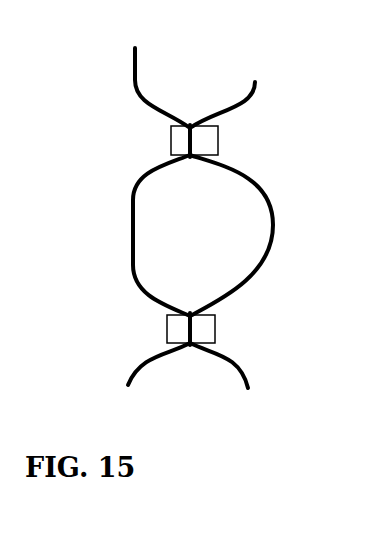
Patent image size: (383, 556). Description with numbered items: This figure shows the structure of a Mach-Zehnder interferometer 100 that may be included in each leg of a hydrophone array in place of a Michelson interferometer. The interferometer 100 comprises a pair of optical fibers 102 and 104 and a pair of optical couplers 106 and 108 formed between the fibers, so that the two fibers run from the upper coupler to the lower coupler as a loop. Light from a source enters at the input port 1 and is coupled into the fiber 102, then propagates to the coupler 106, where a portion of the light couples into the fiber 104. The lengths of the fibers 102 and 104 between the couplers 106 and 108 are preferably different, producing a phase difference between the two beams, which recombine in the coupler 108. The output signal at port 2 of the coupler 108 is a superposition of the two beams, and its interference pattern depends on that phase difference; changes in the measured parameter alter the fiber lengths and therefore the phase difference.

The Mach-Zehnder interferometer 100 is at (93, 332).
The first port / input end 1 is at (260, 72).
The port 2 is at (250, 398).
The optical fiber 102 is at (273, 230).
The optical fiber 104 is at (132, 230).
The optical coupler 106 is at (218, 136).
The optical coupler 108 is at (215, 325).